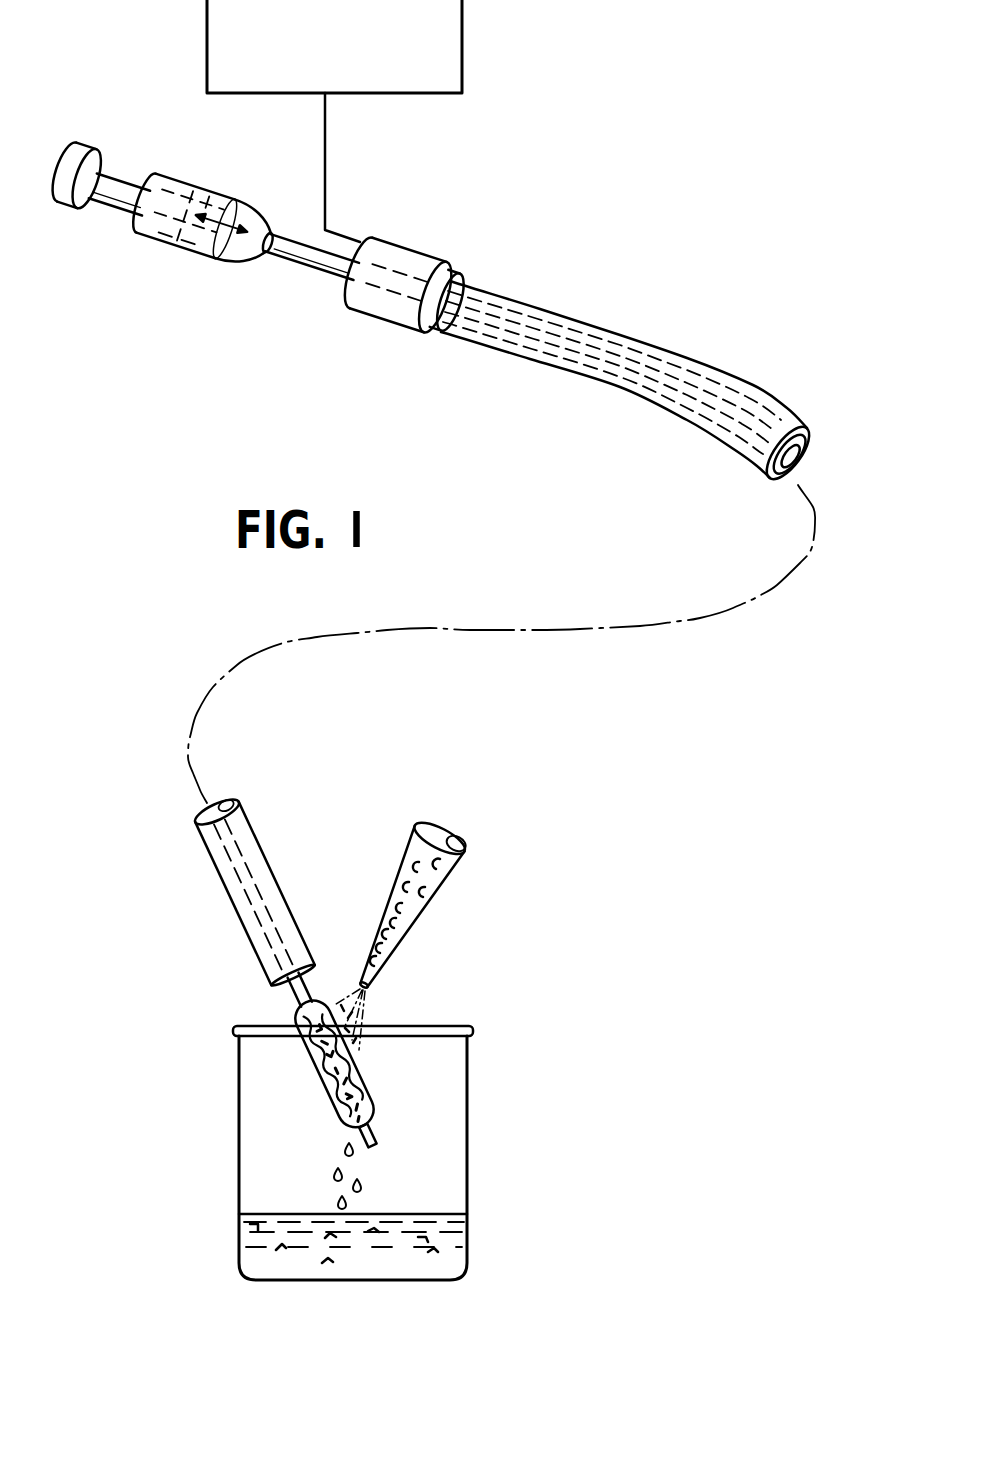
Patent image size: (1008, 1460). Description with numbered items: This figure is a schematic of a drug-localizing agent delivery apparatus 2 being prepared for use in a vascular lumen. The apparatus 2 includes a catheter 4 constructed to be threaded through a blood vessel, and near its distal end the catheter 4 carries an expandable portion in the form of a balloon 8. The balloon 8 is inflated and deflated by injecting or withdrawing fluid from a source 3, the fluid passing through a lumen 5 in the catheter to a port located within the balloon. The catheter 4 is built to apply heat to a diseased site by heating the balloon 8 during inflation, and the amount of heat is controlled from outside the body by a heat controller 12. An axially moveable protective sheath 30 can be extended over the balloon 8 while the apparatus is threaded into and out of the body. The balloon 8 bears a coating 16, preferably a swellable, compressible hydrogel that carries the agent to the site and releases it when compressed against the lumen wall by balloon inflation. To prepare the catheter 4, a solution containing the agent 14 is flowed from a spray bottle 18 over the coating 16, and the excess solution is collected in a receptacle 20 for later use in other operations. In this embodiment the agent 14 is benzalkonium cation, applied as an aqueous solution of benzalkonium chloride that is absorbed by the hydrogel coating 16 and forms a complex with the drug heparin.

The drug-localizing agent delivery apparatus 2 is at (533, 276).
The source 3 is at (206, 233).
The catheter 4 is at (543, 358).
The lumen 5 is at (797, 465).
The balloon 8 is at (293, 1010).
The heat controller 12 is at (463, 53).
The agent 14 is at (380, 902).
The coating 16 is at (367, 1090).
The spray bottle 18 is at (408, 938).
The receptacle 20 is at (470, 1173).
The protective sheath 30 is at (753, 384).